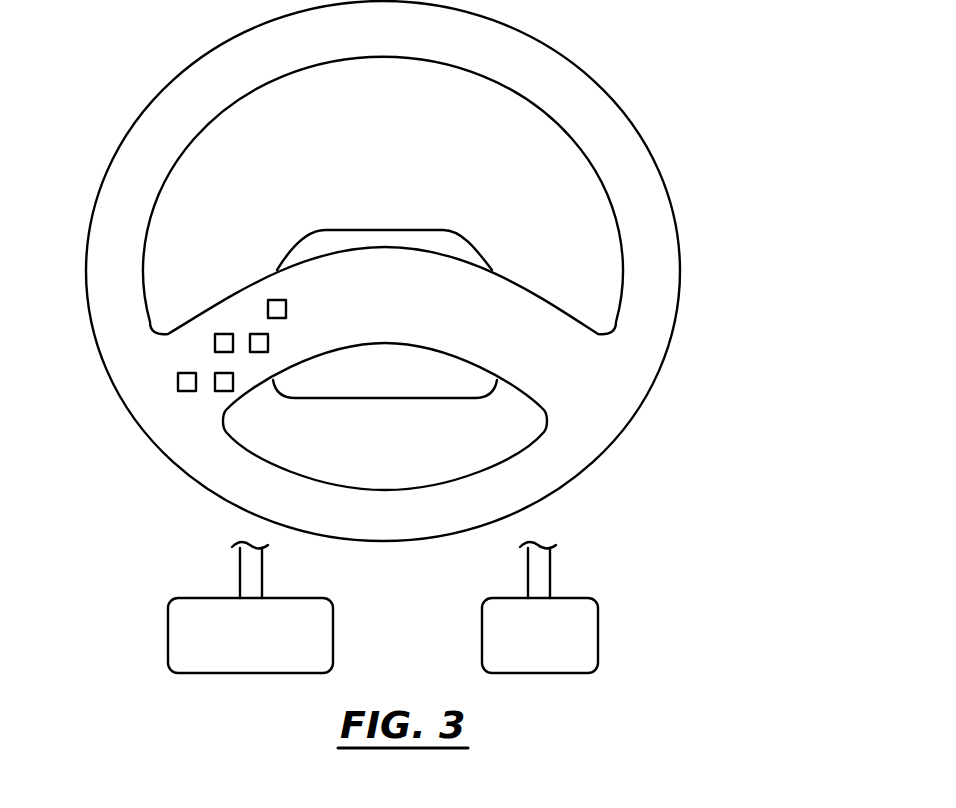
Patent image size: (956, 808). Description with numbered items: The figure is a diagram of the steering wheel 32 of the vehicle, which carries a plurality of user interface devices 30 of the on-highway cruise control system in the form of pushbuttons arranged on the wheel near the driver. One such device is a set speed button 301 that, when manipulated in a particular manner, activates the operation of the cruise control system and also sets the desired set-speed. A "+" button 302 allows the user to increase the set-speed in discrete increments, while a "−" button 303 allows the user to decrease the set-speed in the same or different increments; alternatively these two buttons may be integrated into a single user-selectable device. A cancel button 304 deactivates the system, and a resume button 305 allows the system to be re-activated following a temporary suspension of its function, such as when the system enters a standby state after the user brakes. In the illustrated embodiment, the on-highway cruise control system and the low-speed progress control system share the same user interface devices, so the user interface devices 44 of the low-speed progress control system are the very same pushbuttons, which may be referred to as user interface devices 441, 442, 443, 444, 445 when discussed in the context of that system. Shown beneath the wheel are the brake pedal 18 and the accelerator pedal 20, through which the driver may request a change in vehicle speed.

The steering wheel 32 is at (592, 82).
The user interface devices 30 is at (229, 316).
The user interface devices 44 is at (229, 316).
The set speed button 301 is at (322, 267).
The "+" button 302 is at (215, 288).
The "−" button 303 is at (310, 412).
The cancel button 304 is at (349, 305).
The resume button 305 is at (112, 403).
The user interface device 441 is at (256, 333).
The user interface device 442 is at (215, 333).
The user interface device 443 is at (226, 392).
The user interface device 444 is at (288, 309).
The user interface device 445 is at (177, 383).
The brake pedal 18 is at (237, 651).
The accelerator pedal 20 is at (527, 651).